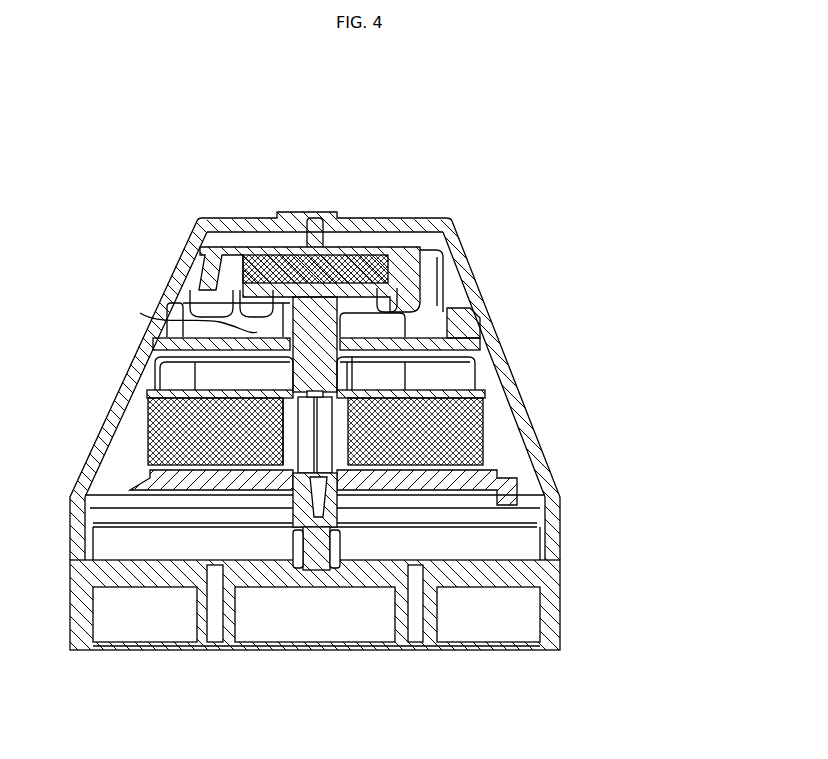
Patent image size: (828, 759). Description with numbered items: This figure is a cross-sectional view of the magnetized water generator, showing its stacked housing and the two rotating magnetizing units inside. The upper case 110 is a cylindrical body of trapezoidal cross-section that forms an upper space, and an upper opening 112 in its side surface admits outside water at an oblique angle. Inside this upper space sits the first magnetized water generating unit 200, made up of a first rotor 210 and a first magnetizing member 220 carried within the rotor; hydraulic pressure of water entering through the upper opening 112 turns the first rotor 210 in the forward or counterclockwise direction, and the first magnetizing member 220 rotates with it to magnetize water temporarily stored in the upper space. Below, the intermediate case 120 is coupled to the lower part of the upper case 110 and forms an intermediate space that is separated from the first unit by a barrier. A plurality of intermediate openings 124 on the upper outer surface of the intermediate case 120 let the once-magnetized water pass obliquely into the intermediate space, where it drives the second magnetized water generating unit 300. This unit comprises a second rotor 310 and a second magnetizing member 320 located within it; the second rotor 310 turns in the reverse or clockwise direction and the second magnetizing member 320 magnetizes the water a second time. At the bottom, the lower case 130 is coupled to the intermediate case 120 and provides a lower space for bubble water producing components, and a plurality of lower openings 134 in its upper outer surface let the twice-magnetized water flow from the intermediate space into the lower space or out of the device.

The upper case 110 is at (478, 255).
The upper opening 112 is at (442, 279).
The intermediate case 120 is at (578, 488).
The intermediate openings 124 is at (257, 332).
The lower case 130 is at (370, 644).
The lower openings 134 is at (412, 630).
The first magnetized water generating unit 200 is at (363, 245).
The first rotor 210 is at (423, 261).
The first magnetizing member 220 is at (335, 213).
The second magnetized water generating unit 300 is at (401, 431).
The second rotor 310 is at (402, 366).
The second magnetizing member 320 is at (467, 428).